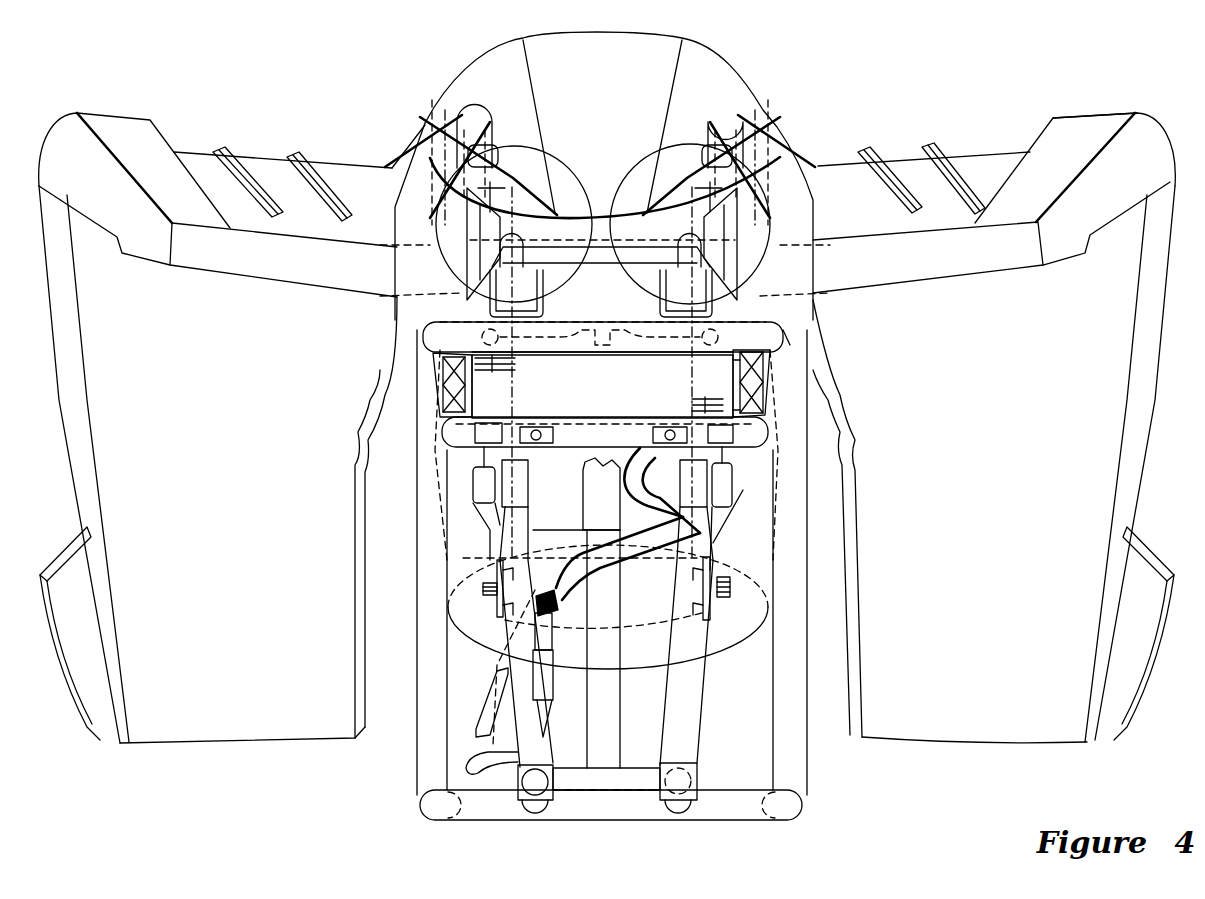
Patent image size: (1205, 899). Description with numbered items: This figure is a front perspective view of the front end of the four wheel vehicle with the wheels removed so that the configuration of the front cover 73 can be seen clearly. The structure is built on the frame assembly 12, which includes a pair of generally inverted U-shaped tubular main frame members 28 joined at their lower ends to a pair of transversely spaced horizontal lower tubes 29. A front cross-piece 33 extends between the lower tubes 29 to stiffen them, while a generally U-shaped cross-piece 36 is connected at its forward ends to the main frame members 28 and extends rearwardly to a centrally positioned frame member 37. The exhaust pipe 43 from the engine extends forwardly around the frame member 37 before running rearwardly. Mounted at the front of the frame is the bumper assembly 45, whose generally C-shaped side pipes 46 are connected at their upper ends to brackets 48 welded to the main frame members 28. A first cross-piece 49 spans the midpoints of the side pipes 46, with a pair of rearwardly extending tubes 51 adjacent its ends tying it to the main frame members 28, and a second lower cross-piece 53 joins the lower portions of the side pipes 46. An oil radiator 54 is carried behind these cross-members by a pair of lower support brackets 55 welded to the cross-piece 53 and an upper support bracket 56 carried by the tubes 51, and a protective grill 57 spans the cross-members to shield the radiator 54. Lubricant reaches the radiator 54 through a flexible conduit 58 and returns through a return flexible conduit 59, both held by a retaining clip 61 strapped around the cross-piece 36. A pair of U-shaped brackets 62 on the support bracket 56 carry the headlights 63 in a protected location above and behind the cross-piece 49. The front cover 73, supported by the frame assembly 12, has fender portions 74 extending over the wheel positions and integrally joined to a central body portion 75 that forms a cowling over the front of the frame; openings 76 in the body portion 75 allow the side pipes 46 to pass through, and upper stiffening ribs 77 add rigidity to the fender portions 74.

The frame assembly 12 is at (812, 765).
The main frame members 28 is at (700, 712).
The lower tubes 29 is at (463, 800).
The front cross-piece 33 is at (640, 780).
The U-shaped cross-piece 36 is at (533, 533).
The centrally positioned frame member 37 is at (613, 700).
The exhaust pipe 43 is at (745, 622).
The bumper assembly 45 is at (437, 522).
The side pipes 46 is at (430, 395).
The brackets 48 is at (507, 167).
The first cross-piece 49 is at (795, 350).
The rearwardly extending tubes 51 is at (435, 335).
The second lower cross-piece 53 is at (770, 432).
The oil radiator 54 is at (720, 385).
The lower support brackets 55 is at (552, 440).
The upper support bracket 56 is at (643, 330).
The protective grill 57 is at (445, 380).
The flexible conduit 58 is at (487, 492).
The return flexible conduit 59 is at (730, 525).
The retaining clip 61 is at (570, 597).
The U-shaped brackets 62 is at (560, 305).
The headlights 63 is at (555, 175).
The front cover 73 is at (1013, 147).
The fender portions 74 is at (265, 152).
The central body portion 75 is at (598, 28).
The openings 76 is at (422, 116).
The upper stiffening ribs 77 is at (222, 152).